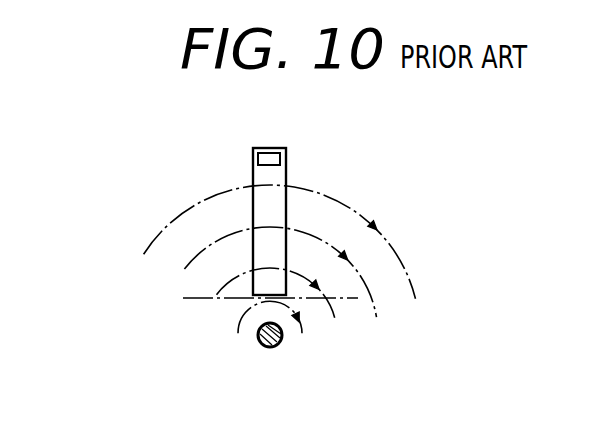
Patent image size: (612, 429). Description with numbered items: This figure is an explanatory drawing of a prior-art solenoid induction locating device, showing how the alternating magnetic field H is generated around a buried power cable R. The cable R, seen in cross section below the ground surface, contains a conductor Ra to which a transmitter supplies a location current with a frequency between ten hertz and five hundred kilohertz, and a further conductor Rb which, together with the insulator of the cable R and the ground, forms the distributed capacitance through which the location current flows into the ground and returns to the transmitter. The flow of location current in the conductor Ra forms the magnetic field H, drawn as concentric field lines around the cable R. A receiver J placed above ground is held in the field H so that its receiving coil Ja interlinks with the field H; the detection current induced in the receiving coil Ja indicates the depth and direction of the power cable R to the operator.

The magnetic field H is at (342, 200).
The receiver J is at (268, 148).
The receiving coil Ja is at (280, 160).
The power cable R is at (259, 349).
The conductor Ra is at (268, 348).
The conductor Rb is at (284, 338).